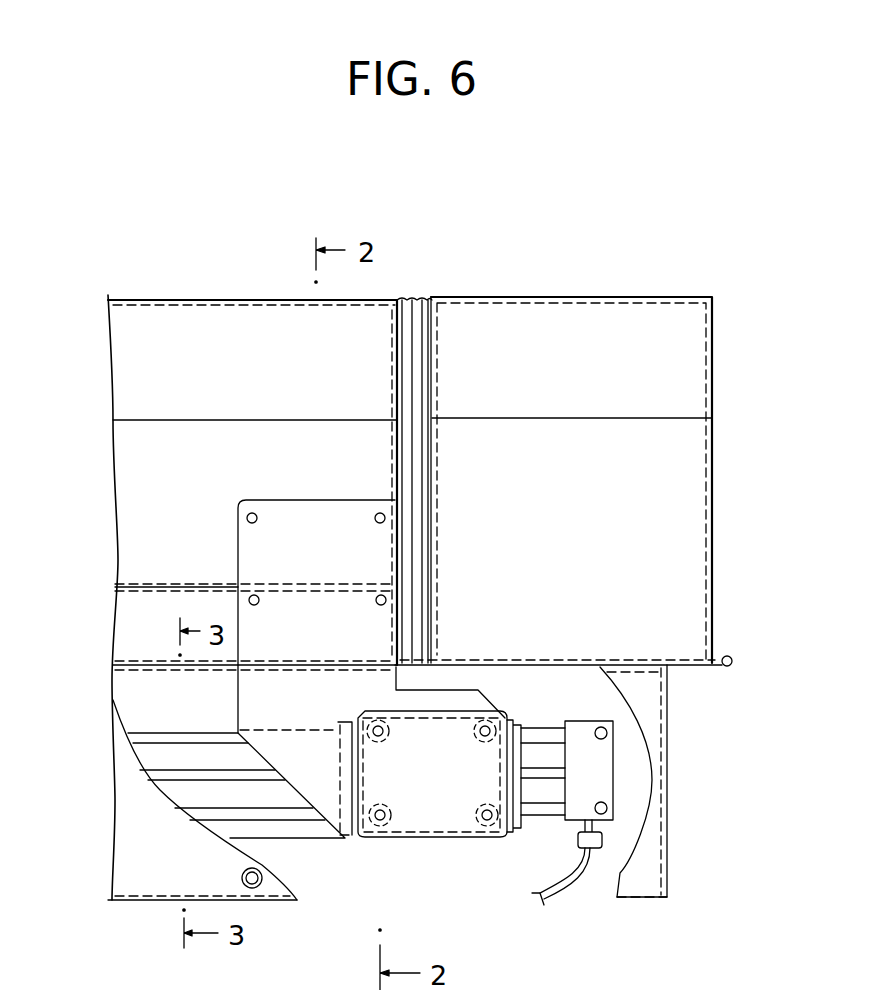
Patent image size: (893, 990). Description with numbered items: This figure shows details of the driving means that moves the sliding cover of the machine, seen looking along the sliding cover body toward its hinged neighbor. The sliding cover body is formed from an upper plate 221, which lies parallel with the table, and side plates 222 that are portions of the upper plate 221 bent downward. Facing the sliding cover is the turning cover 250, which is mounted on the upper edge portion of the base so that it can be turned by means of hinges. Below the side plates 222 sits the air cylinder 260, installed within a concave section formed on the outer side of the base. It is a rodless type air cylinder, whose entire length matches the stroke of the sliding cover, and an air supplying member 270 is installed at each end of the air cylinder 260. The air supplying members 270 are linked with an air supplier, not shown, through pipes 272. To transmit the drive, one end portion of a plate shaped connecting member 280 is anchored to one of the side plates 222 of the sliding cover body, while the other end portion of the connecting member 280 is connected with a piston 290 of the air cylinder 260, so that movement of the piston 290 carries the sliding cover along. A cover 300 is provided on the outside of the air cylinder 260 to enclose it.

The upper plate 221 is at (218, 298).
The side plates 222 is at (137, 453).
The turning cover 250 is at (688, 357).
The air cylinder 260 is at (287, 797).
The air supplying member 270 is at (595, 765).
The pipes 272 is at (582, 876).
The connecting member 280 is at (252, 545).
The piston 290 is at (448, 820).
The cover 300 is at (142, 850).